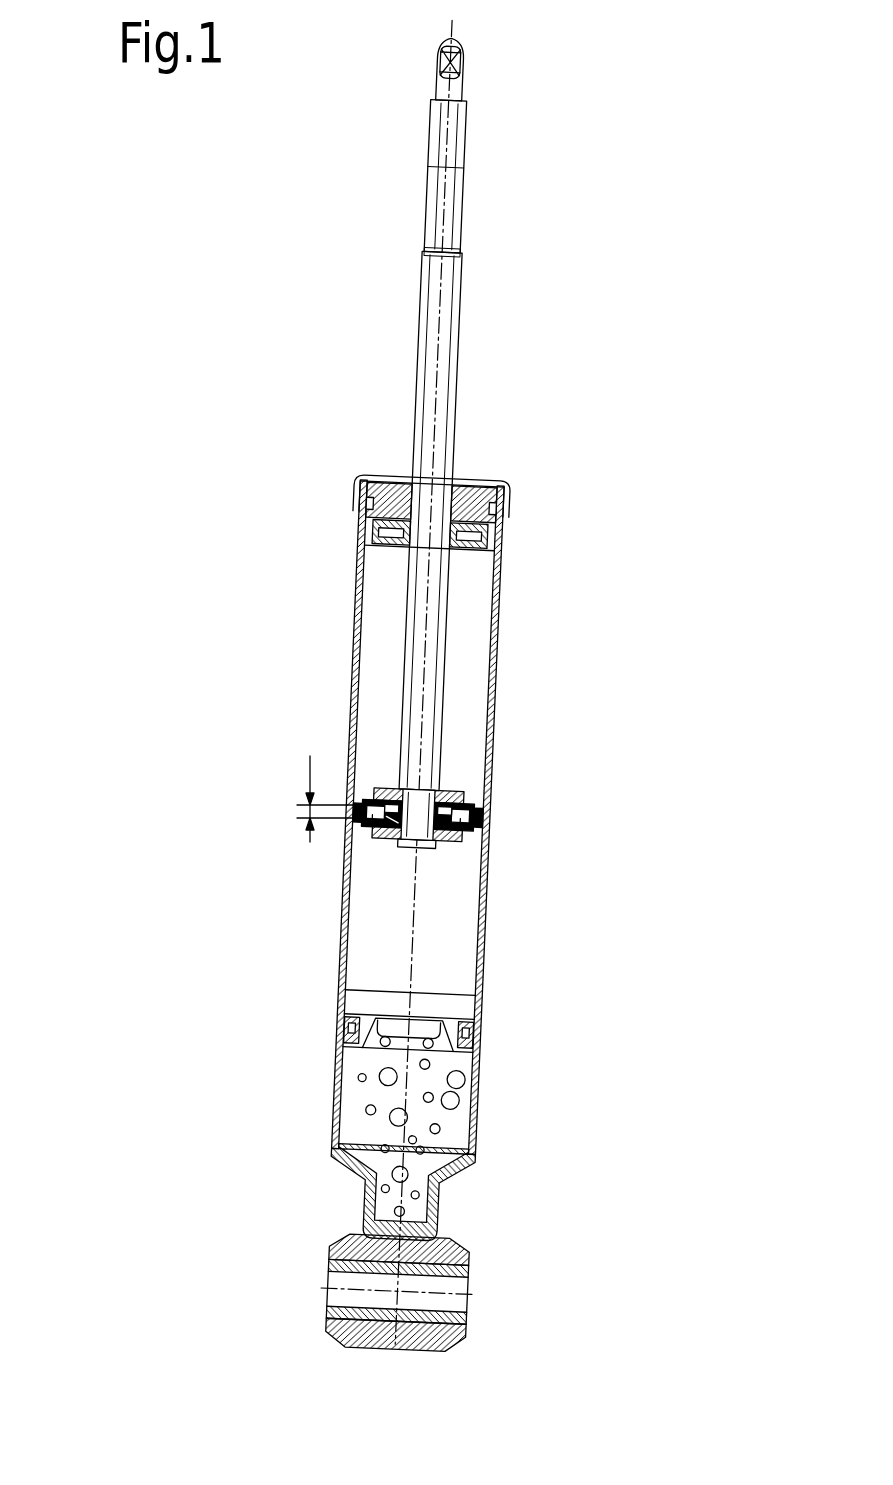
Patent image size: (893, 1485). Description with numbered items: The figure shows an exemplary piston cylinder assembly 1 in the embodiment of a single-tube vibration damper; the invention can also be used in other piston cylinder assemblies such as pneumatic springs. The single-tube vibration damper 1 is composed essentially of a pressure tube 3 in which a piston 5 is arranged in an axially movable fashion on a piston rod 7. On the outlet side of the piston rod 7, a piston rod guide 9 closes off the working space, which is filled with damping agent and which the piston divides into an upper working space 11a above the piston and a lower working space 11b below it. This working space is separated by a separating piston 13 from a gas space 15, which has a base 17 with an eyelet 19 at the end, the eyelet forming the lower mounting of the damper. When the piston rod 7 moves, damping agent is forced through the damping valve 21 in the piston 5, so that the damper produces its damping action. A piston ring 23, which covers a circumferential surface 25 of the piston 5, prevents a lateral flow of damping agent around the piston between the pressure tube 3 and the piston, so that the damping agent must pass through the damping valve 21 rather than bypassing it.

The piston cylinder assembly 1 is at (192, 862).
The pressure tube 3 is at (492, 676).
The piston 5 is at (369, 857).
The piston rod 7 is at (432, 318).
The piston rod guide 9 is at (487, 525).
The working space 11a is at (380, 680).
The working space 11b is at (447, 953).
The separating piston 13 is at (427, 1023).
The gas space 15 is at (436, 1113).
The base 17 is at (462, 1176).
The eyelet 19 is at (464, 1262).
The damping valve 21 is at (370, 842).
The piston ring 23 is at (485, 797).
The circumferential surface 25 is at (300, 812).